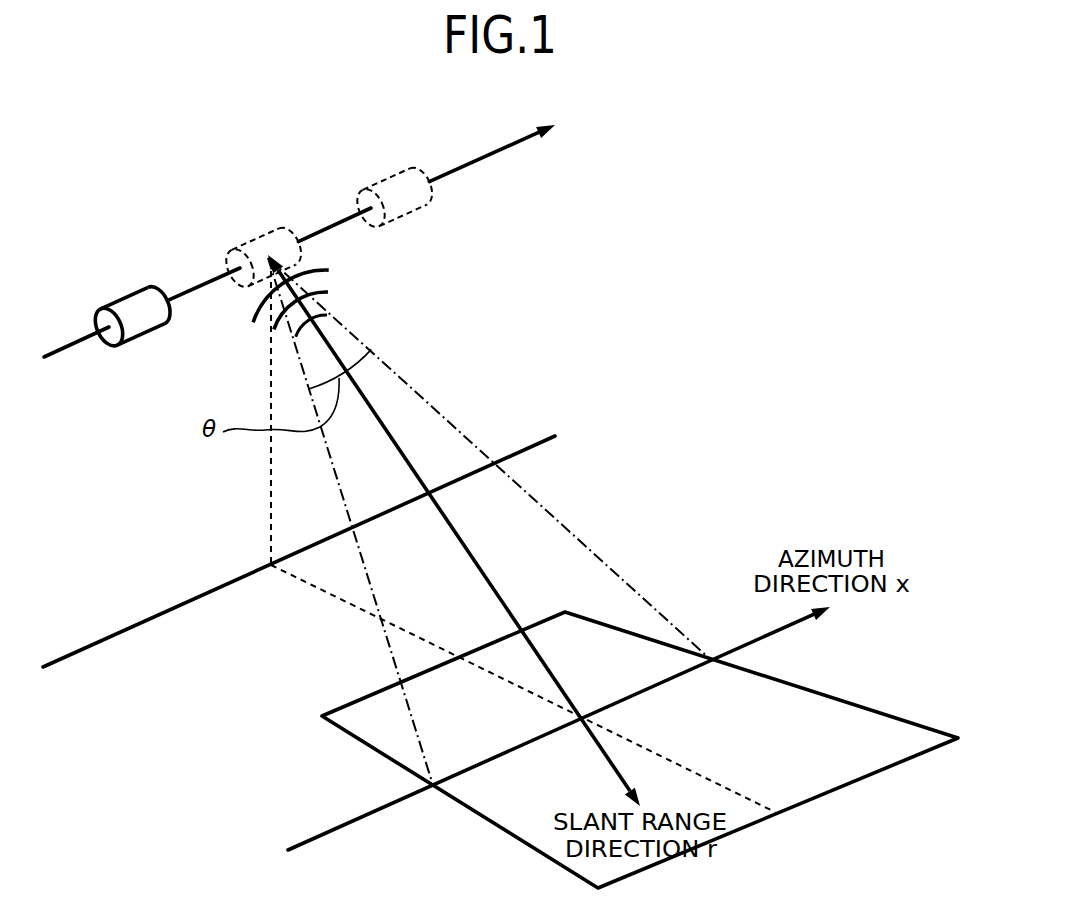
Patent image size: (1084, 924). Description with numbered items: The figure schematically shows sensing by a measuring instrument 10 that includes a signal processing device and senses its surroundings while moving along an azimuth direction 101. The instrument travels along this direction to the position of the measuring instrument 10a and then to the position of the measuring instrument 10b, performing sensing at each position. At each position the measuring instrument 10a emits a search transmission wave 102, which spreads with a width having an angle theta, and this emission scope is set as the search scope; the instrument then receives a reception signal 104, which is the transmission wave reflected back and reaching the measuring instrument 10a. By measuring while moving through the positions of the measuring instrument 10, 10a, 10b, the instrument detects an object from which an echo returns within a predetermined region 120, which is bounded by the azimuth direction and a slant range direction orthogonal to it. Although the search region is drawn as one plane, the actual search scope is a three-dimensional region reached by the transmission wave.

The measuring instrument 10 is at (142, 340).
The measuring instrument 10a is at (237, 288).
The measuring instrument 10b is at (403, 217).
The azimuth direction 101 is at (472, 162).
The transmission wave 102 is at (320, 340).
The reception signal 104 is at (324, 296).
The predetermined region 120 is at (878, 710).